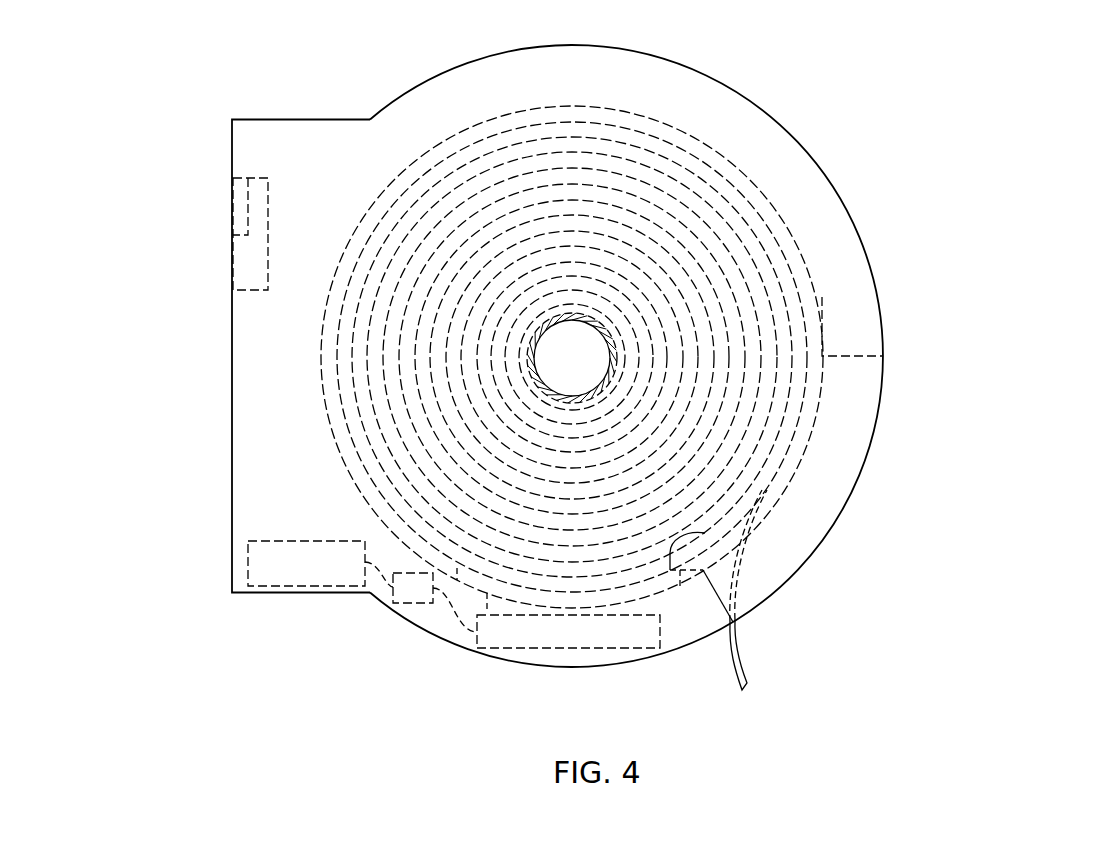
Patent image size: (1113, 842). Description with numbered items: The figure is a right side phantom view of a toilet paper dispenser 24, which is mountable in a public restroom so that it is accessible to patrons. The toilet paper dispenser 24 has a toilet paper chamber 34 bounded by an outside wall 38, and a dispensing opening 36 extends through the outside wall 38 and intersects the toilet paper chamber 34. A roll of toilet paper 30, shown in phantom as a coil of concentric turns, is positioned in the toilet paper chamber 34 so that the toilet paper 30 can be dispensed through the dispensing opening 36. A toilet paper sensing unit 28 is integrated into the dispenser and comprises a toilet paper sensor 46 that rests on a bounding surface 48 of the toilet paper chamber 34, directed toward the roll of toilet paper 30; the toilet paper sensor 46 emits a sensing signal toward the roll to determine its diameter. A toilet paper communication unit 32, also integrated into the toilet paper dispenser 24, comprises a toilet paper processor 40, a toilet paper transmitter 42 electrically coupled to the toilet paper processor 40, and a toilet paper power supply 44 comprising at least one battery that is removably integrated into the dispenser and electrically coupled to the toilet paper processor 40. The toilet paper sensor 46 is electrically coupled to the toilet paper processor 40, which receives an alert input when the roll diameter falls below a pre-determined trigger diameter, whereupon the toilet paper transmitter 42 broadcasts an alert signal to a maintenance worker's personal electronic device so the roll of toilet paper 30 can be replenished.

The toilet paper dispenser 24 is at (590, 337).
The toilet paper sensing unit 28 is at (688, 605).
The roll of toilet paper 30 is at (528, 125).
The toilet paper communication unit 32 is at (354, 613).
The toilet paper chamber 34 is at (815, 298).
The dispensing opening 36 is at (847, 430).
The outside wall 38 is at (850, 221).
The toilet paper processor 40 is at (572, 638).
The toilet paper transmitter 42 is at (407, 602).
The toilet paper power supply 44 is at (263, 578).
The toilet paper sensor 46 is at (705, 533).
The bounding surface 48 is at (477, 593).